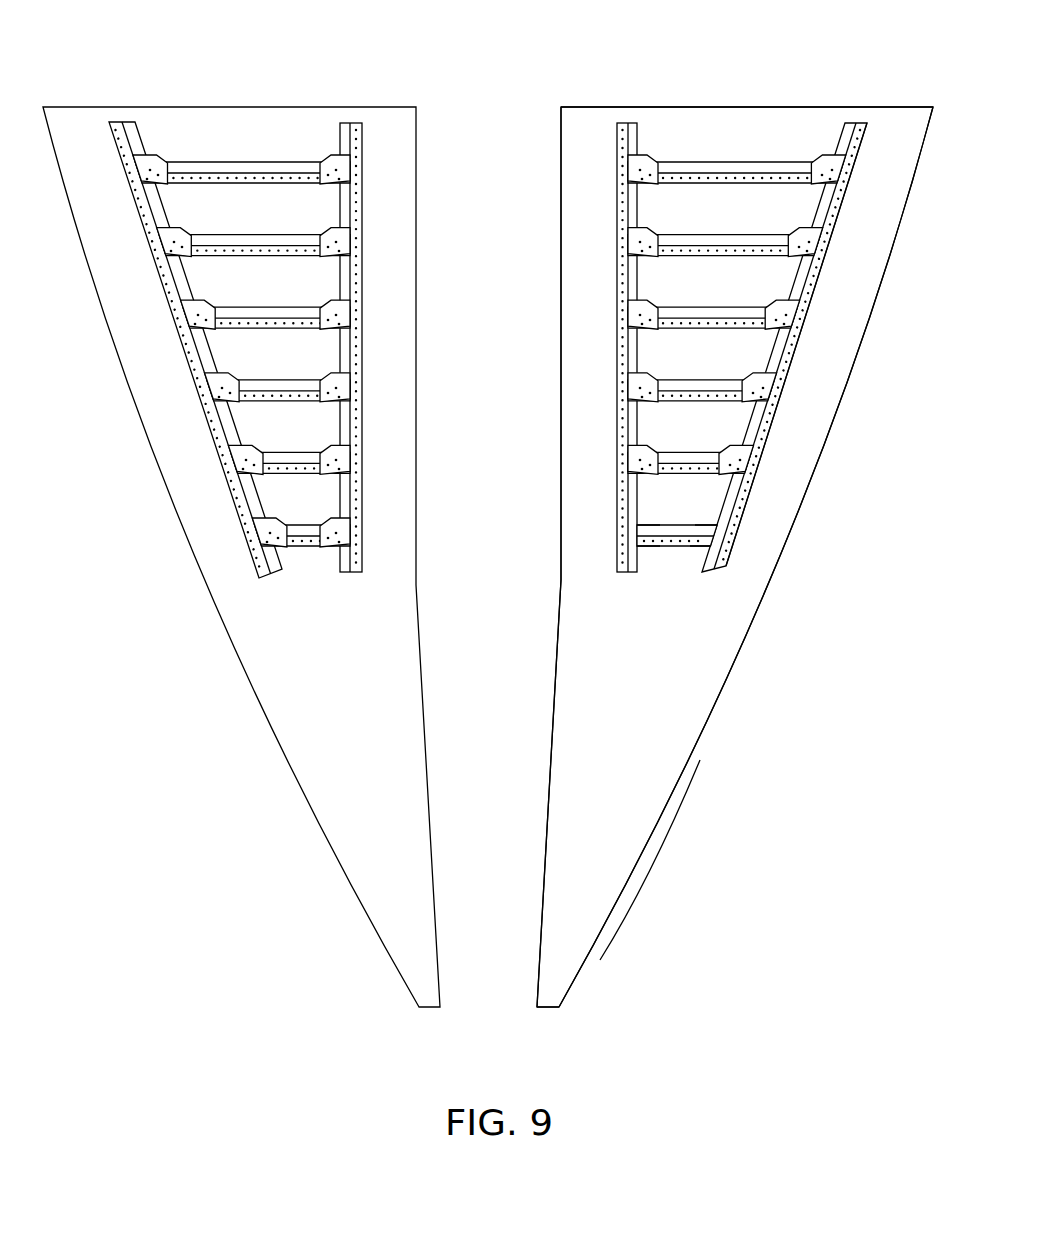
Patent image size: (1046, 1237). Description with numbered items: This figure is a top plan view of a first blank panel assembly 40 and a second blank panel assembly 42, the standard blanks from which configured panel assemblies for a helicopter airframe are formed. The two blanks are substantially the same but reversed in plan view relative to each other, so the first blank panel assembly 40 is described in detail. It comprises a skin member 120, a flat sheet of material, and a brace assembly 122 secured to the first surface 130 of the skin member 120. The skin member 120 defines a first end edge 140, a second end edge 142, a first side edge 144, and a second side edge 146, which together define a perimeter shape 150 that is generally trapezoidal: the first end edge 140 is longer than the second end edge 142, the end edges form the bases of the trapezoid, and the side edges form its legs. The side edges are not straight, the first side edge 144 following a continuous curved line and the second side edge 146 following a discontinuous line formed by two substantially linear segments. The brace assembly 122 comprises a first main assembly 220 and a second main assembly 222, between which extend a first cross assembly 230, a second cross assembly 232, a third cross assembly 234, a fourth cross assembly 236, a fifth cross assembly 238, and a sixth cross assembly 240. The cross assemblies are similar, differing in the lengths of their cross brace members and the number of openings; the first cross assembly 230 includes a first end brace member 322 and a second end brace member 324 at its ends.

The first blank panel assembly 40 is at (716, 543).
The second blank panel assembly 42 is at (226, 70).
The skin member 120 is at (660, 803).
The brace assembly 122 is at (748, 545).
The first surface 130 is at (810, 400).
The first end edge 140 is at (542, 1008).
The second end edge 142 is at (561, 508).
The first side edge 144 is at (668, 107).
The second side edge 146 is at (873, 302).
The perimeter shape 150 is at (608, 958).
The first main assembly 220 is at (596, 226).
The second main assembly 222 is at (853, 240).
The first cross assembly 230 is at (669, 546).
The second cross assembly 232 is at (675, 457).
The third cross assembly 234 is at (675, 385).
The fourth cross assembly 236 is at (682, 312).
The fifth cross assembly 238 is at (680, 240).
The sixth cross assembly 240 is at (666, 168).
The first end brace member 322 is at (640, 548).
The second end brace member 324 is at (695, 548).